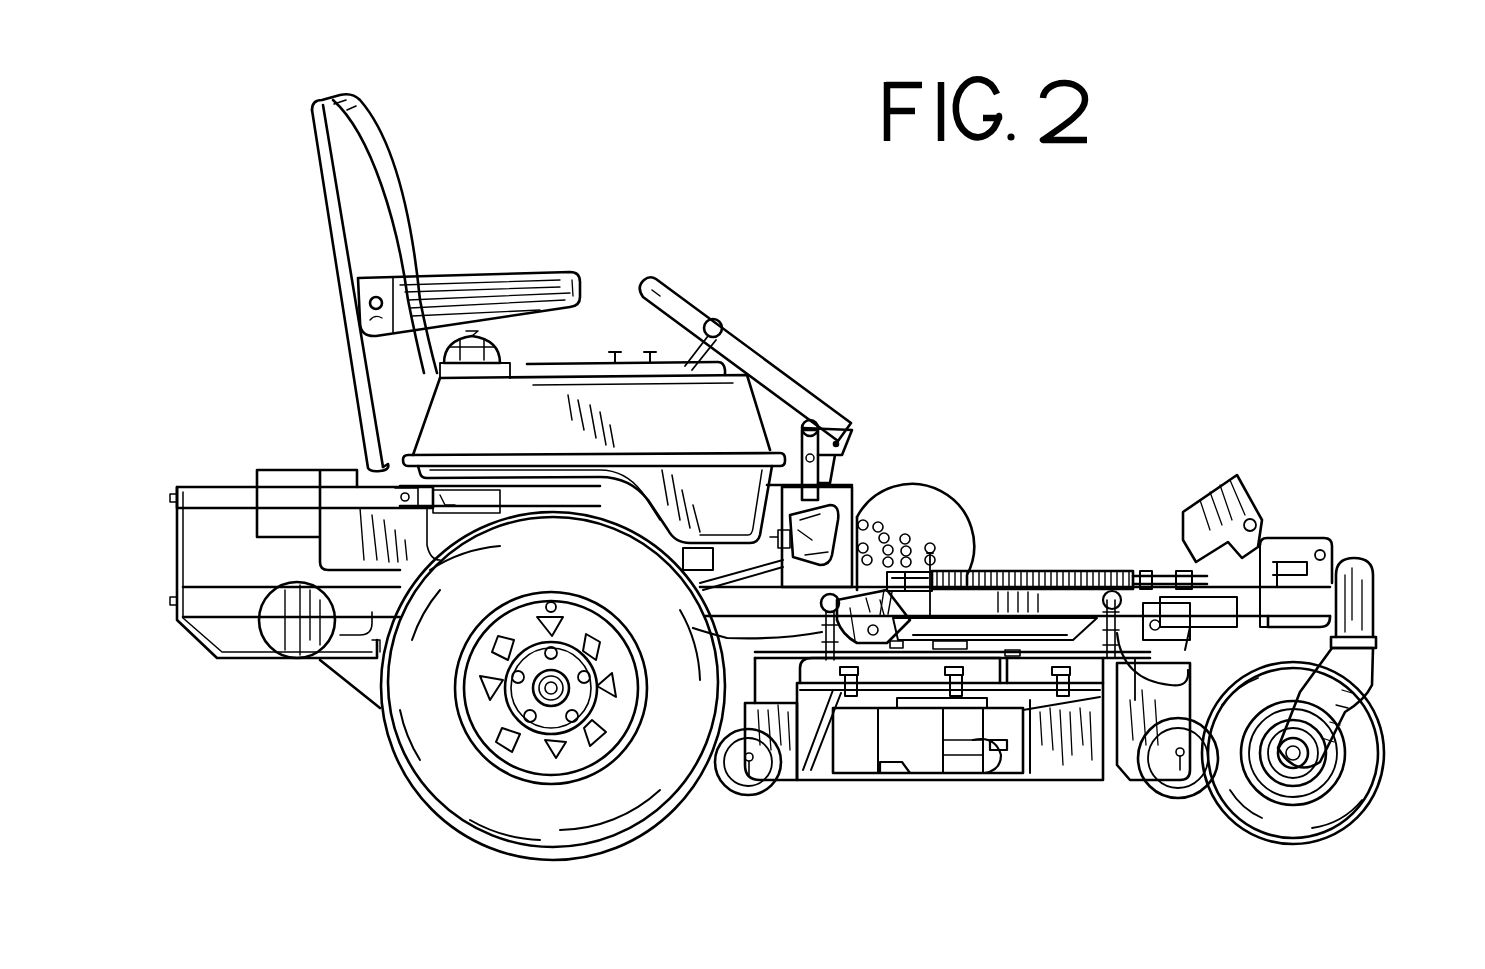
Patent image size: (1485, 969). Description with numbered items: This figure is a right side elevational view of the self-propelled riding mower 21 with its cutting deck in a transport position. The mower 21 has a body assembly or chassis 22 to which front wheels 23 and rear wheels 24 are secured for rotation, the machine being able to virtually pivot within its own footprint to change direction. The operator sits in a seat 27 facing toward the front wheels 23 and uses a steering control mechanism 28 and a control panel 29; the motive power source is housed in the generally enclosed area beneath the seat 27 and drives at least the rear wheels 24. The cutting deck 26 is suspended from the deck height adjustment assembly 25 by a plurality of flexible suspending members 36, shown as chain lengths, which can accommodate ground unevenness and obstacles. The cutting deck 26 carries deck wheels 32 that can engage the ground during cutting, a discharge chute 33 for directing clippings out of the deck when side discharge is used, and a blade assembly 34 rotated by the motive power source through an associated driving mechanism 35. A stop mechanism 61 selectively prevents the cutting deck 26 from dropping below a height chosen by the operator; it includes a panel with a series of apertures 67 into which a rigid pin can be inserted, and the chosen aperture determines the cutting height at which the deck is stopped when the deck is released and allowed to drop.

The mower 21 is at (1358, 520).
The body assembly or chassis 22 is at (211, 483).
The front wheels 23 is at (1360, 742).
The rear wheels 24 is at (410, 762).
The deck height adjustment assembly 25 is at (1057, 565).
The cutting deck 26 is at (1115, 770).
The seat 27 is at (393, 155).
The steering control mechanism 28 is at (676, 303).
The control panel 29 is at (583, 360).
The deck wheels 32 is at (740, 790).
The discharge chute 33 is at (1060, 770).
The blade assembly 34 is at (893, 778).
The driving mechanism 35 is at (985, 773).
The suspending members 36 is at (1170, 685).
The stop mechanism 61 is at (945, 535).
The apertures 67 is at (862, 548).